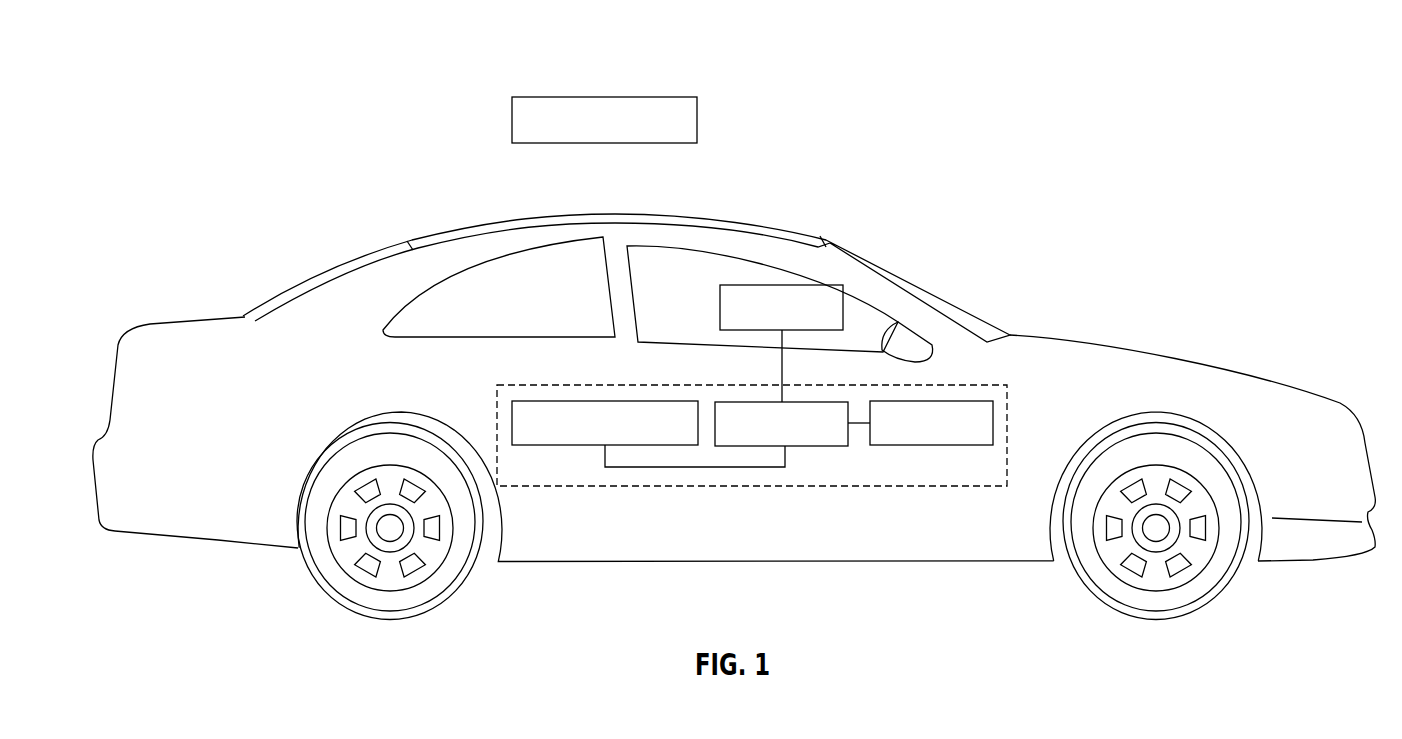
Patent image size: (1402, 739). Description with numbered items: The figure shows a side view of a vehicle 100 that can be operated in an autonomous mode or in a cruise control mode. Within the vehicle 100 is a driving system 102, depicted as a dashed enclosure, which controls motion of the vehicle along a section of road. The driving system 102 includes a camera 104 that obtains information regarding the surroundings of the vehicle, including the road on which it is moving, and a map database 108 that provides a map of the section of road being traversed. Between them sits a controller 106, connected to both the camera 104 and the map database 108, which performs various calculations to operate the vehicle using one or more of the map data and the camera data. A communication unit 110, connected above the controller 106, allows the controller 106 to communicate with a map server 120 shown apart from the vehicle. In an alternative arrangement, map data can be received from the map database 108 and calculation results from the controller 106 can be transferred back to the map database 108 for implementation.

The vehicle 100 is at (1150, 117).
The driving system 102 is at (631, 386).
The camera 104 is at (928, 447).
The controller 106 is at (812, 447).
The map database 108 is at (578, 447).
The communication unit 110 is at (783, 285).
The map server 120 is at (578, 97).